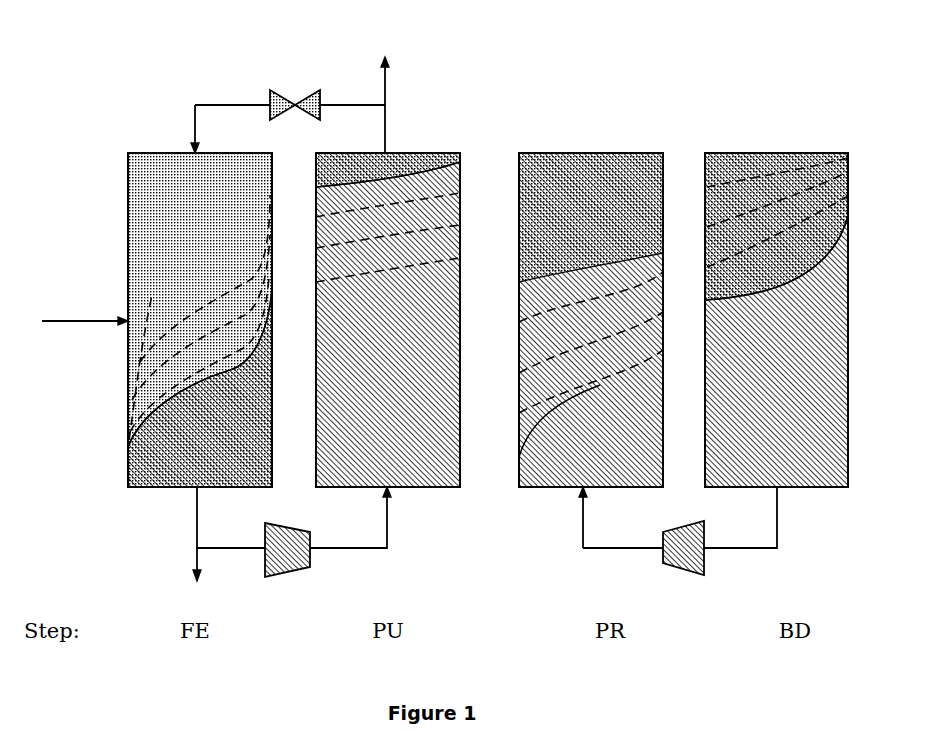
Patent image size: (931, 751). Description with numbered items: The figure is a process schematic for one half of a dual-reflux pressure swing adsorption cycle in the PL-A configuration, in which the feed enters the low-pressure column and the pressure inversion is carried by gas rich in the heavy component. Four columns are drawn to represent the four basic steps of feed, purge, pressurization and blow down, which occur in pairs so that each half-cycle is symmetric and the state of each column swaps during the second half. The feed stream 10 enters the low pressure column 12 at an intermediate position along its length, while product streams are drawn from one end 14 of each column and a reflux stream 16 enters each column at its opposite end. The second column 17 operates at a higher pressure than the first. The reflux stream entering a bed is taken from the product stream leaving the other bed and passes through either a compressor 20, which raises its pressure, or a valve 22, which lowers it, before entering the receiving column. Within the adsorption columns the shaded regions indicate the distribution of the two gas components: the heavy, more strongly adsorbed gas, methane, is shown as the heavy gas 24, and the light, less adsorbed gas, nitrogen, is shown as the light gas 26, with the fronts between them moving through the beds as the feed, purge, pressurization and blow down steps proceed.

The feed stream 10 is at (83, 306).
The low pressure column 12 is at (128, 216).
The column end 14 is at (195, 547).
The reflux stream 16 is at (195, 102).
The second column 17 is at (738, 152).
The compressor 20 is at (310, 569).
The valve 22 is at (292, 94).
The heavy gas 24 is at (128, 447).
The light gas 26 is at (388, 80).